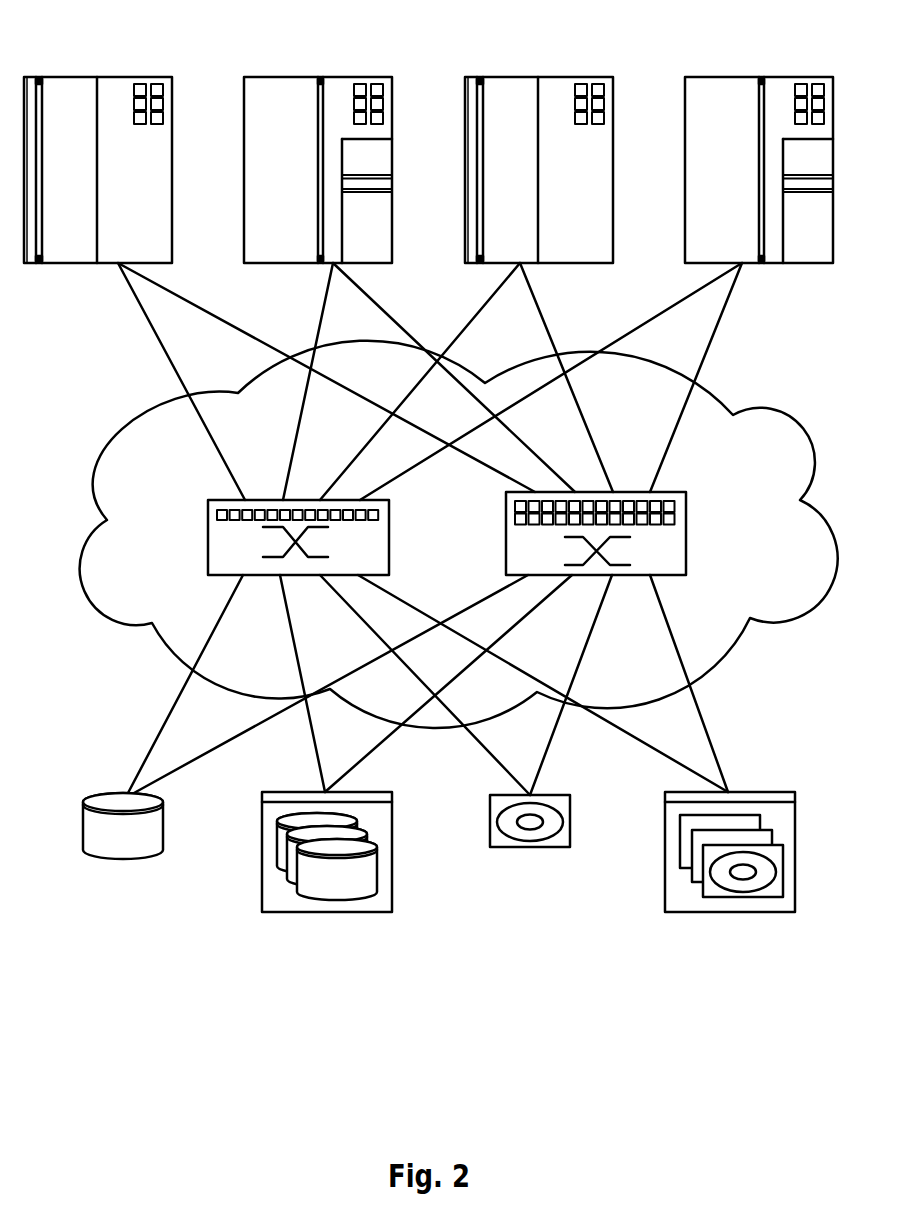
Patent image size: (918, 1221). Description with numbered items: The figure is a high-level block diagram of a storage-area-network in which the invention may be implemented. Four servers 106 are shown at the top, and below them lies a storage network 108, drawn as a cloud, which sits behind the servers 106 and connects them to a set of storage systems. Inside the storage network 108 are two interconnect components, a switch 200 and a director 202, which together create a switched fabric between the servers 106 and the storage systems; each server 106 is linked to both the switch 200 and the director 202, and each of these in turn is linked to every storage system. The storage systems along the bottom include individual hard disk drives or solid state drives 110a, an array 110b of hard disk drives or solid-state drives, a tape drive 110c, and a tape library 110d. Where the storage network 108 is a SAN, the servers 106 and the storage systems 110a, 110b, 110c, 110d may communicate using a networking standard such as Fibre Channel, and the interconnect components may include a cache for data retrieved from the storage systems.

The servers 106 is at (89, 185).
The storage network 108 is at (773, 545).
The switch 200 is at (222, 542).
The director 202 is at (523, 545).
The individual hard disk drives or solid state drives 110a is at (120, 858).
The arrays of hard disk drives or solid-state drives 110b is at (328, 913).
The tape drives 110c is at (530, 848).
The tape libraries 110d is at (737, 913).